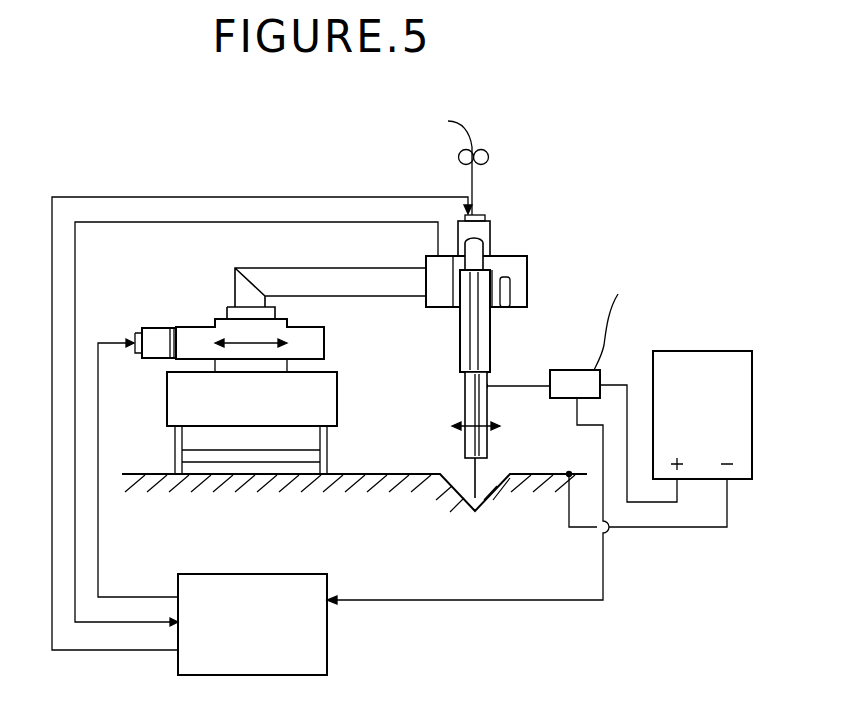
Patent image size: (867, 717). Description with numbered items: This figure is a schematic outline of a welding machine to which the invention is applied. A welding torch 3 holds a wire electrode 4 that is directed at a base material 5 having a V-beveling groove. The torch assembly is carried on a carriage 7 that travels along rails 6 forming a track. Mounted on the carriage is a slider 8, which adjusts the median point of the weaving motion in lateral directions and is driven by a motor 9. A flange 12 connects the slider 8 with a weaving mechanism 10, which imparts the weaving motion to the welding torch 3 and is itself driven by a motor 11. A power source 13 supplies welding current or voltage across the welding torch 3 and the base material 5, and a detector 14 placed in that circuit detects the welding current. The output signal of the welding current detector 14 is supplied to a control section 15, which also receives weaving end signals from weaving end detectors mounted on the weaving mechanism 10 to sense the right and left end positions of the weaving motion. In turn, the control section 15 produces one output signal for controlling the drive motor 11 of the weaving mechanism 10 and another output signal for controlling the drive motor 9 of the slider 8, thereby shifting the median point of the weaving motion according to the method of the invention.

The welding torch 3 is at (473, 413).
The wire electrode 4 is at (476, 480).
The base material 5 is at (547, 477).
The rails 6 is at (178, 463).
The carriage 7 is at (180, 409).
The slider 8 is at (193, 332).
The motor 9 is at (153, 333).
The weaving mechanism 10 is at (515, 276).
The motor 11 is at (482, 228).
The flange 12 is at (268, 280).
The power source 13 is at (703, 365).
The detector 14 is at (575, 388).
The control section 15 is at (292, 588).